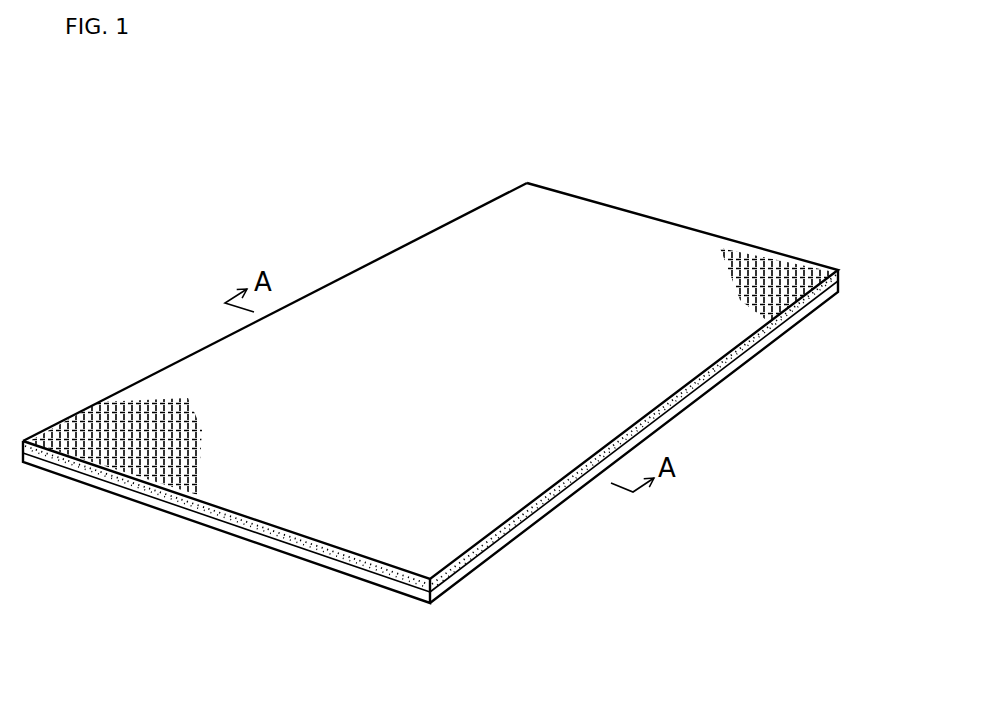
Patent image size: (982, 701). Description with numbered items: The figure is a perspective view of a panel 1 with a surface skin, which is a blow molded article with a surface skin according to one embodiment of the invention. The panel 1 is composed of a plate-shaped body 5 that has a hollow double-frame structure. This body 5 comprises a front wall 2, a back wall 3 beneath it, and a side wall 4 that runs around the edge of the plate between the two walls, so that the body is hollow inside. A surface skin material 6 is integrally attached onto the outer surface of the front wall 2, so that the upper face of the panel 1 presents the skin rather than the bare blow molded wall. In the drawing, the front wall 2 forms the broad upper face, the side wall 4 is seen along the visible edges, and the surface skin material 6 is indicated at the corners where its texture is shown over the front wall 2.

The panel with a surface skin 1 is at (434, 388).
The front wall 2 is at (612, 255).
The back wall 3 is at (255, 538).
The side wall 4 is at (703, 390).
The plate-shaped body 5 is at (429, 231).
The surface skin material 6 is at (783, 253).